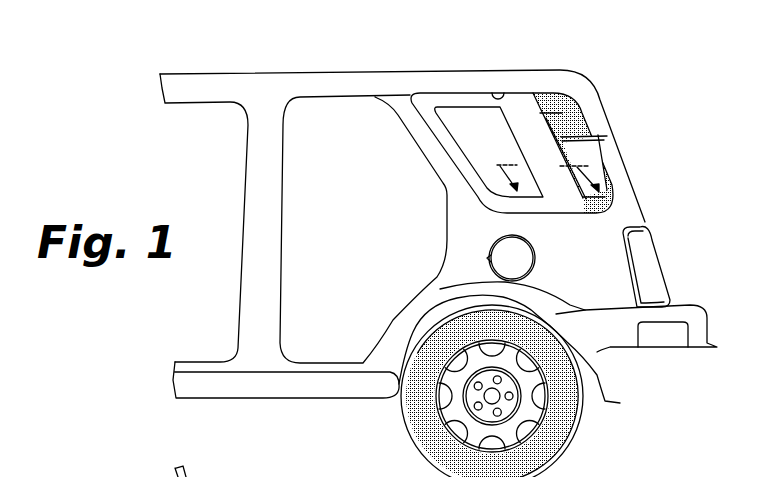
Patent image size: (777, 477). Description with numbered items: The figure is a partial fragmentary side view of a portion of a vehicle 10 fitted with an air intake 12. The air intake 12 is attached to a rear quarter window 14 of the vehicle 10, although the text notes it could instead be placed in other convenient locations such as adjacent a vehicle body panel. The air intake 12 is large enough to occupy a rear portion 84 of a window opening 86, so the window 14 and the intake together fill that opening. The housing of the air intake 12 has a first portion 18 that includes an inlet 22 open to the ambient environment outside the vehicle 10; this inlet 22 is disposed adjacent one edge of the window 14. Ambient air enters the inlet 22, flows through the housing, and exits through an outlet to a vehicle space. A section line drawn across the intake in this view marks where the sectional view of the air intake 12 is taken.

The vehicle 10 is at (186, 62).
The air intake 12 is at (580, 97).
The rear quarter window 14 is at (450, 91).
The first portion 18 is at (227, 476).
The inlet 22 is at (570, 127).
The rear portion 84 is at (541, 97).
The window opening 86 is at (498, 95).